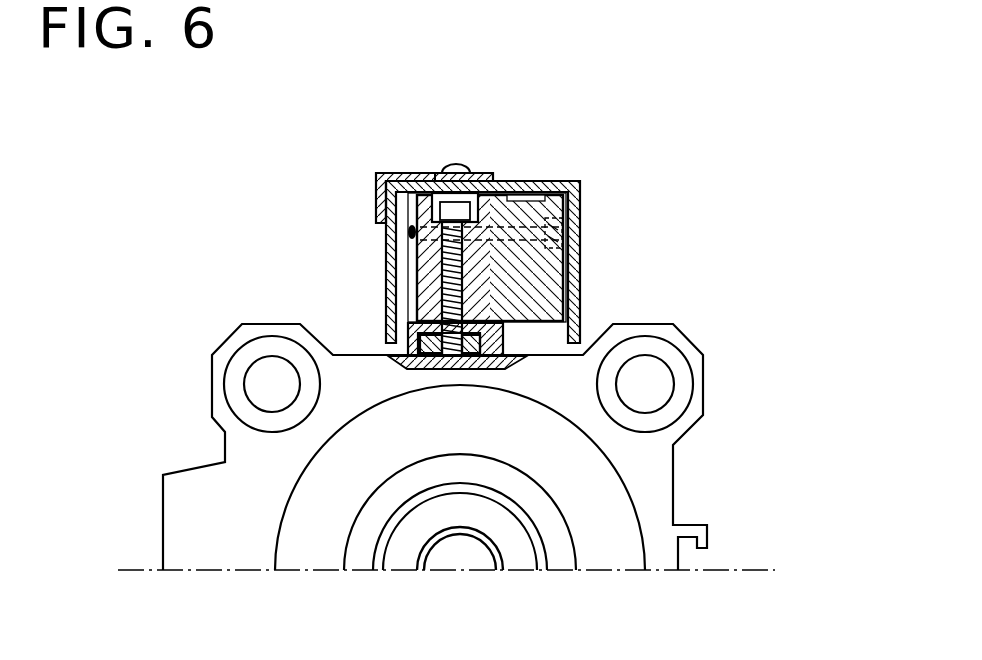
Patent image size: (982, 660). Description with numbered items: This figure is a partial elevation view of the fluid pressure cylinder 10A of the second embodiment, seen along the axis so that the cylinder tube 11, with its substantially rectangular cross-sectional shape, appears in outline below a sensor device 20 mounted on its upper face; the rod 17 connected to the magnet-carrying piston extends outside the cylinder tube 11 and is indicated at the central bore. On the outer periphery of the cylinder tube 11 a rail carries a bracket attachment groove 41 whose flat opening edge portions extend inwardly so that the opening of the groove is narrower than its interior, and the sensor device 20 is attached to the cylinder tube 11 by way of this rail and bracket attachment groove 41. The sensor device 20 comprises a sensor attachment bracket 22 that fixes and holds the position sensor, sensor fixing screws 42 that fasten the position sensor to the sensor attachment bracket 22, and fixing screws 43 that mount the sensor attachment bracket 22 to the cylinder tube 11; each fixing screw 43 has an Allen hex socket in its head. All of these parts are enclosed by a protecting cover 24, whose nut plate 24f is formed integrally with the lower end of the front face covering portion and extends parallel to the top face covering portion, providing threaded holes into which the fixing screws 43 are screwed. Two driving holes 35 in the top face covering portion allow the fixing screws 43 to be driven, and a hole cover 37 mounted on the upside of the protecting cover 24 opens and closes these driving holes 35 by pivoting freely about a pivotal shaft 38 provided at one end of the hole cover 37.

The fluid pressure cylinder 10A is at (738, 406).
The cylinder tube 11 is at (667, 489).
The rod 17 is at (443, 558).
The sensor device 20 is at (561, 160).
The sensor attachment bracket 22 is at (427, 255).
The protecting cover 24 is at (521, 183).
The nut plate 24f is at (388, 326).
The driving hole 35 is at (436, 174).
The hole cover 37 is at (390, 172).
The pivotal shaft 38 is at (458, 166).
The bracket attachment groove 41 is at (503, 333).
The sensor fixing screw 42 is at (557, 232).
The fixing screw 43 is at (443, 277).